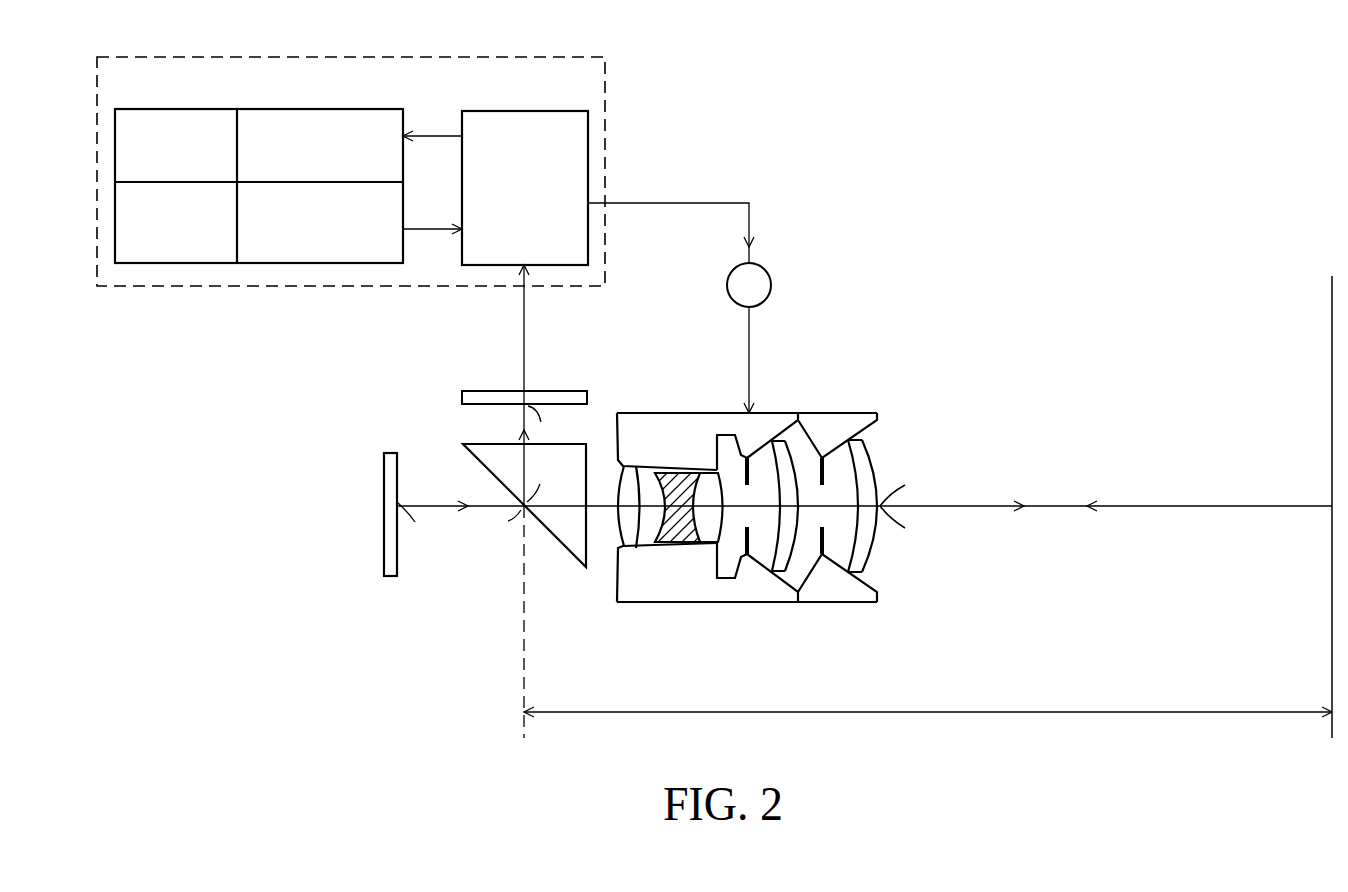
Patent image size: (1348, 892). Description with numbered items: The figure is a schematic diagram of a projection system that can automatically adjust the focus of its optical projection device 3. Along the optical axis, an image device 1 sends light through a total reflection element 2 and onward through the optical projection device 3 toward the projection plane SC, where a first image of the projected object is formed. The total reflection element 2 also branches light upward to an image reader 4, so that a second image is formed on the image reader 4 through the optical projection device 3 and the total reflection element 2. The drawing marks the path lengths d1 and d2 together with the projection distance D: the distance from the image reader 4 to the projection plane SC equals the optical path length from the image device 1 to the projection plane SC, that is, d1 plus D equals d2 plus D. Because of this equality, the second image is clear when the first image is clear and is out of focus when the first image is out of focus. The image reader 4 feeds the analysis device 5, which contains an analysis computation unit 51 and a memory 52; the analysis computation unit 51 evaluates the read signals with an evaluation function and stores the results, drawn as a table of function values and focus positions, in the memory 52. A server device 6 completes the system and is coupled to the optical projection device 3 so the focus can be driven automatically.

The image device 1 is at (384, 511).
The total reflection element 2 is at (586, 567).
The optical projection device 3 is at (846, 413).
The image reader 4 is at (462, 396).
The analysis device 5 is at (320, 57).
The analysis computation unit 51 is at (463, 111).
The memory 52 is at (117, 109).
The server device 6 is at (772, 285).
The optical path length from image device d1 is at (864, 522).
The optical path length from image reader d2 is at (540, 385).
The projection distance D is at (928, 696).
The projection plane SC is at (1332, 282).